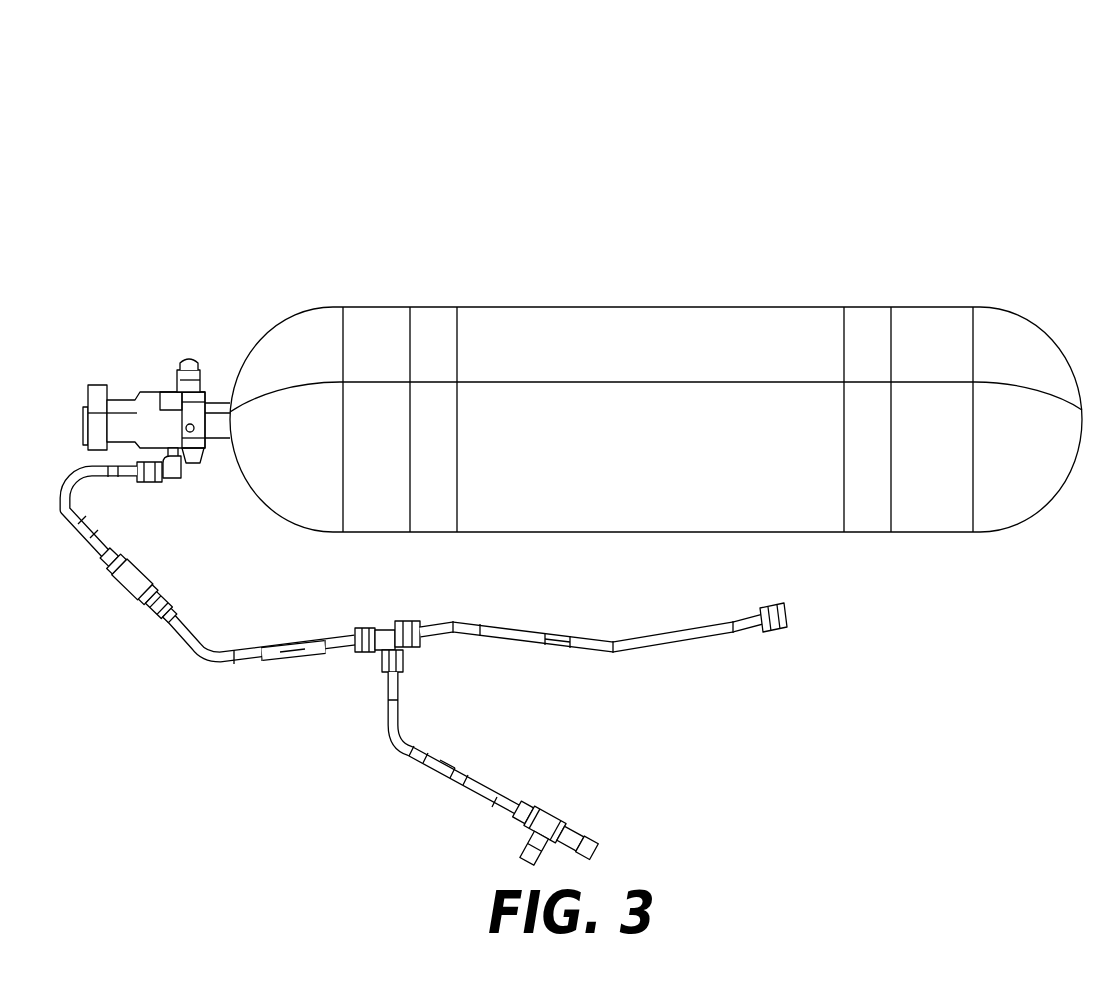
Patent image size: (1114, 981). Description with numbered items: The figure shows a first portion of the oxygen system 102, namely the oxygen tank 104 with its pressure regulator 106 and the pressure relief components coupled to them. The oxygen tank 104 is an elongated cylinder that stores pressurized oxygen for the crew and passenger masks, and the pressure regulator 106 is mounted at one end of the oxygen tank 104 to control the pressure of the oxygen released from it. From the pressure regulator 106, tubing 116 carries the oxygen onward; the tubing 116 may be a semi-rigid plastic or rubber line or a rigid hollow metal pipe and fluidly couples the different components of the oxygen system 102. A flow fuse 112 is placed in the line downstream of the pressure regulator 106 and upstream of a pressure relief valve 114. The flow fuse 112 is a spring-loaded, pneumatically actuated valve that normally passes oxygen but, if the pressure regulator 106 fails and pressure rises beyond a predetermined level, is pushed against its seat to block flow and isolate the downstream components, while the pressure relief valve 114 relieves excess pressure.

The oxygen system 102 is at (378, 122).
The oxygen tank 104 is at (628, 312).
The pressure regulator 106 is at (170, 392).
The flow fuse 112 is at (118, 592).
The pressure relief valve 114 is at (556, 824).
The tubing 116 is at (660, 647).